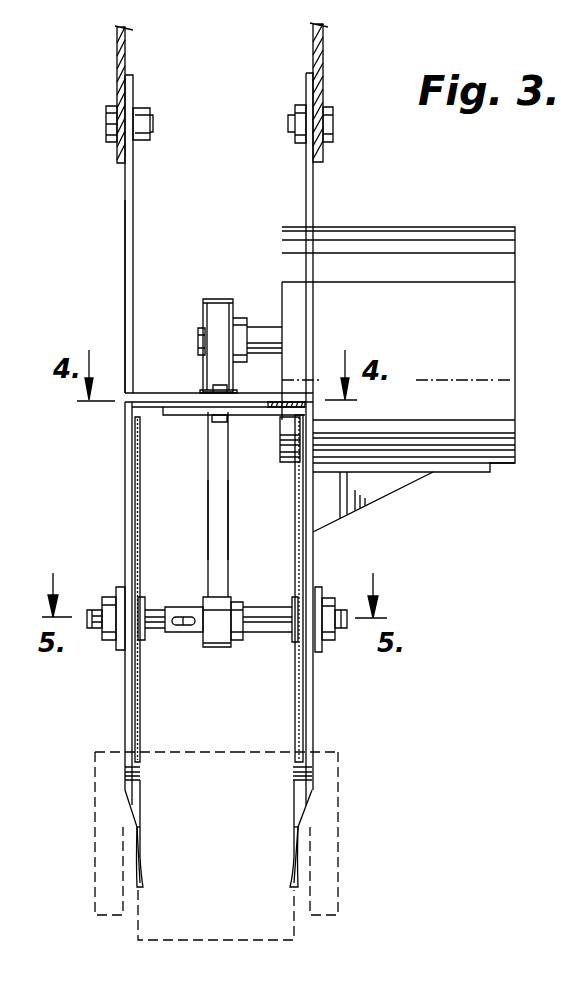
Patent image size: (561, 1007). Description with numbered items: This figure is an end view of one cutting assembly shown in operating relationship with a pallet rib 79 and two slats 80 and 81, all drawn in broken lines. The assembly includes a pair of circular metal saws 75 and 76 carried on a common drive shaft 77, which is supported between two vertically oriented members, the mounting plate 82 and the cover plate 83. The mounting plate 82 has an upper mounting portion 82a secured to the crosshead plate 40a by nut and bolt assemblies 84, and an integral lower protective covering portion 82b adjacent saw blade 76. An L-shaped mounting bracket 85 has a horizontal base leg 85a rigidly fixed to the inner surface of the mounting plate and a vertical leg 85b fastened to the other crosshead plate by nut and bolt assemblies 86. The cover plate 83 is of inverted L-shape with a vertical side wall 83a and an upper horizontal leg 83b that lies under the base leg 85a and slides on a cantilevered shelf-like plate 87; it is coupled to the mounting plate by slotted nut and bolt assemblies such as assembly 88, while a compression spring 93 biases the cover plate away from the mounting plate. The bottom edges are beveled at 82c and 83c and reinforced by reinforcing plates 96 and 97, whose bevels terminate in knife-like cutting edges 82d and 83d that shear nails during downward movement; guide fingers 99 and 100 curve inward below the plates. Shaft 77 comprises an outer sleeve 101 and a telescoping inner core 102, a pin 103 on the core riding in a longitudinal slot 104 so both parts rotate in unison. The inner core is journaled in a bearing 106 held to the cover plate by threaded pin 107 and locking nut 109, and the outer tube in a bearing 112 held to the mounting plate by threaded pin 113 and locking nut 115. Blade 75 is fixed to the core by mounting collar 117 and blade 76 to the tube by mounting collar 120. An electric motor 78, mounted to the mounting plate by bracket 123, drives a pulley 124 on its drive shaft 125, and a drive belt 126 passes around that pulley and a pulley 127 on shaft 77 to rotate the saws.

The crosshead plate 40a is at (323, 68).
The nut and bolt assemblies 86 is at (106, 128).
The nut and bolt assemblies 84 is at (332, 137).
The vertical leg 85b is at (133, 198).
The L-shaped mounting bracket 85 is at (133, 265).
The upper mounting portion 82a is at (313, 198).
The mounting plate member 82 is at (313, 540).
The electric motor 78 is at (468, 227).
The pulley 124 is at (240, 318).
The drive shaft of motor 125 is at (200, 335).
The nut and bolt assembly 88 is at (225, 388).
The horizontal base leg 85a is at (186, 393).
The compression spring 93 is at (273, 418).
The upper horizontal leg 83b is at (155, 415).
The shelf-like plate 87 is at (230, 432).
The drive belt 126 is at (210, 488).
The cover plate member 83 is at (125, 488).
The circular metal saw 75 is at (140, 710).
The circular metal saw 76 is at (295, 709).
The mounting bracket 123 is at (400, 490).
The bearing 106 is at (120, 590).
The threaded pin 107 is at (104, 615).
The locking nut 109 is at (108, 636).
The mounting collar 117 is at (143, 600).
The inner core 102 is at (155, 612).
The longitudinal slot 104 is at (183, 626).
The pin 103 is at (187, 628).
The outer sleeve 101 is at (210, 647).
The pulley 127 is at (236, 602).
The drive shaft 77 is at (275, 632).
The mounting collar 120 is at (295, 600).
The bearing 112 is at (320, 590).
The locking nut 115 is at (328, 600).
The threaded pin 113 is at (340, 628).
The vertical side wall 83a is at (125, 689).
The lower protective covering portion 82b is at (313, 690).
The reinforcing plate 97 is at (140, 802).
The reinforcing plate 96 is at (294, 802).
The bevel 83c is at (135, 817).
The bevel 82c is at (298, 820).
The knife-like cutting edge 83d is at (136, 830).
The knife-like cutting edge 82d is at (296, 832).
The guide finger 99 is at (143, 867).
The guide finger 100 is at (290, 867).
The slat 80 is at (95, 790).
The slat 81 is at (338, 762).
The rib 79 is at (235, 752).